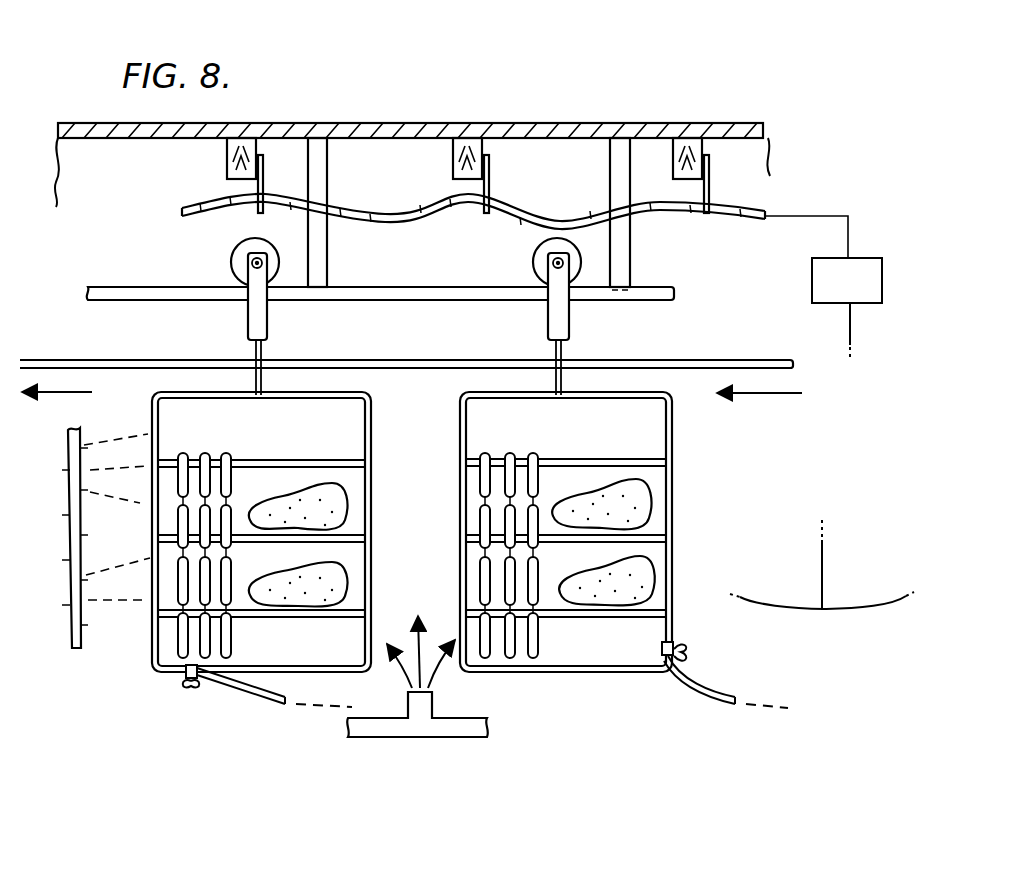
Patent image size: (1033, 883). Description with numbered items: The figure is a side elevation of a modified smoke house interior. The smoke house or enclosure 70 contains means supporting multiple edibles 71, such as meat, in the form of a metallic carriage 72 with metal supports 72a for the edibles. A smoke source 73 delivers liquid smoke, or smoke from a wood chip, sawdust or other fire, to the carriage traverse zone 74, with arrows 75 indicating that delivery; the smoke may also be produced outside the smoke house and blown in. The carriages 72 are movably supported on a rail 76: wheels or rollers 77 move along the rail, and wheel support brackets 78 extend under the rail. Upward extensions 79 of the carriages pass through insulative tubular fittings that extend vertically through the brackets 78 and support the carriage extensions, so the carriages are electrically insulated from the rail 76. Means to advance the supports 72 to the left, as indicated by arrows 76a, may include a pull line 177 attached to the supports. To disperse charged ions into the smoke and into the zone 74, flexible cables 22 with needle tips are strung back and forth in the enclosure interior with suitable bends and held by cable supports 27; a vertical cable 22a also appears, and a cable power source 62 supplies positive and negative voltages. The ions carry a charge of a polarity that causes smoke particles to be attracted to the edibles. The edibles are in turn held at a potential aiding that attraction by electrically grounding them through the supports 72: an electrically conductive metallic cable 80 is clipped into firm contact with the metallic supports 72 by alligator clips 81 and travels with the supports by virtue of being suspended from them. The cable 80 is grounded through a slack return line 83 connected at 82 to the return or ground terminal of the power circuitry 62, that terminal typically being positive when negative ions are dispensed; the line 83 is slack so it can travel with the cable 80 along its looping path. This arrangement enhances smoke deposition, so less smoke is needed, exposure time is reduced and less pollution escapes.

The smoke house 70 is at (552, 110).
The cable supports 27 is at (264, 175).
The flexible cables 22 is at (384, 208).
The vertical cable 22a is at (66, 623).
The cable power source 62 is at (866, 270).
The connection 82 is at (850, 326).
The slack return line 83 is at (870, 611).
The rail 76 is at (110, 287).
The arrows 76a is at (75, 390).
The wheels or rollers 77 is at (233, 262).
The wheel support brackets 78 is at (262, 322).
The upward extensions 79 is at (266, 373).
The pull line 177 is at (661, 360).
The carriage traverse zone 74 is at (469, 288).
The metallic carriage 72 is at (674, 490).
The metal supports 72a is at (648, 537).
The edibles 71 is at (338, 508).
The alligator clips 81 is at (183, 684).
The electrically conductive metallic cable 80 is at (249, 697).
The smoke source 73 is at (432, 702).
The arrows 75 is at (402, 680).